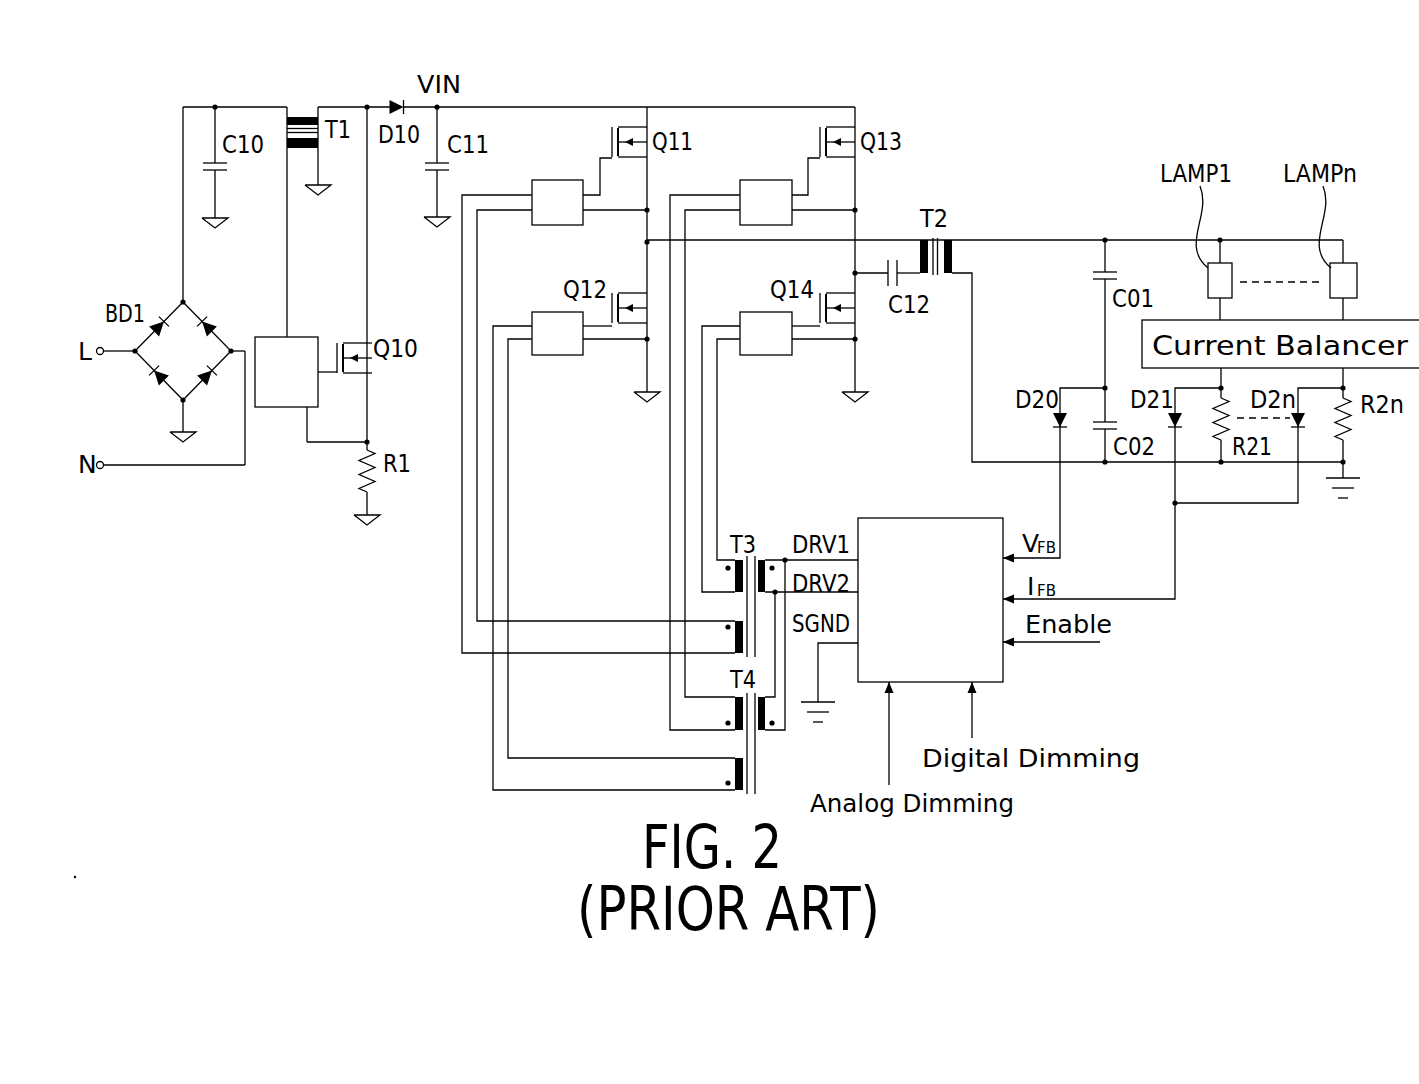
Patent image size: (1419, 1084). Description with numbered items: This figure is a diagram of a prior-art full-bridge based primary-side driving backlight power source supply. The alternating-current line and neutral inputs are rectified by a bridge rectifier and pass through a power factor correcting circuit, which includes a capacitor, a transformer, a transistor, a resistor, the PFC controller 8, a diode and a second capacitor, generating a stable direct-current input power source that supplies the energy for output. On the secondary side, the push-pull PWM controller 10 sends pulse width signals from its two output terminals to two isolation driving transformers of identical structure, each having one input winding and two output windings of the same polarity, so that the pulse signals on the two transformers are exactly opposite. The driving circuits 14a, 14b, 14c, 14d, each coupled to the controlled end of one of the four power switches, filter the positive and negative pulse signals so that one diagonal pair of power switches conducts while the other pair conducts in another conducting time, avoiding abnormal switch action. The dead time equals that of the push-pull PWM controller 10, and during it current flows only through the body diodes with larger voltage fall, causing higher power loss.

The PFC controller 8 is at (282, 407).
The push-pull PWM controller 10 is at (1003, 667).
The driving circuit 14a is at (554, 180).
The driving circuit 14b is at (555, 355).
The driving circuit 14c is at (764, 180).
The driving circuit 14d is at (763, 355).